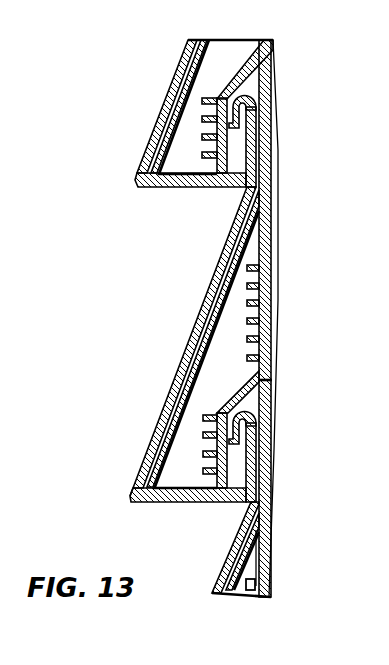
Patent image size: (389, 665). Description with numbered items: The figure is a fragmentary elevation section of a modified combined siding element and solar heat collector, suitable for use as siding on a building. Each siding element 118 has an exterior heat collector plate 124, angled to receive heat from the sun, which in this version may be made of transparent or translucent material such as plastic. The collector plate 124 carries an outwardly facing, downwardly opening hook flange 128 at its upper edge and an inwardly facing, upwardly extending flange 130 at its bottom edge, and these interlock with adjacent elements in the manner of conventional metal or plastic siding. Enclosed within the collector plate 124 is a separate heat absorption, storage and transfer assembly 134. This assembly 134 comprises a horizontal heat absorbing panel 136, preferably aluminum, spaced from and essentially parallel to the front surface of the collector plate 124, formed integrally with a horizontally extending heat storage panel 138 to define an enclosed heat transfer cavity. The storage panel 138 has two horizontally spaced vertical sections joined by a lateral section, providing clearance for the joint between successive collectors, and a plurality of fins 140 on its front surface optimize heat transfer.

The siding element 118 is at (180, 68).
The exterior heat collector plate 124 is at (150, 150).
The hook flange 128 is at (237, 119).
The flange 130 is at (248, 152).
The heat absorption, storage and transfer assembly 134 is at (222, 58).
The heat absorbing panel 136 is at (170, 126).
The heat storage panel 138 is at (268, 74).
The fins 140 is at (200, 96).